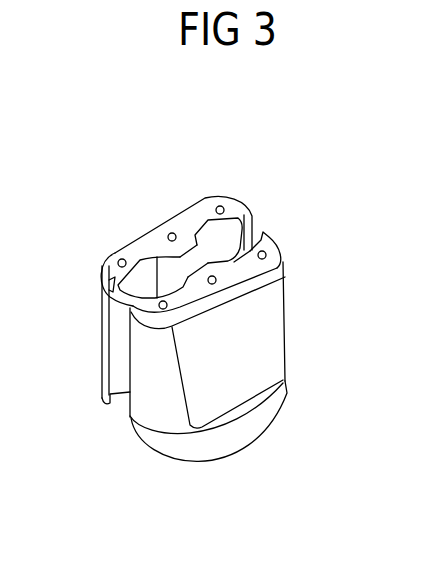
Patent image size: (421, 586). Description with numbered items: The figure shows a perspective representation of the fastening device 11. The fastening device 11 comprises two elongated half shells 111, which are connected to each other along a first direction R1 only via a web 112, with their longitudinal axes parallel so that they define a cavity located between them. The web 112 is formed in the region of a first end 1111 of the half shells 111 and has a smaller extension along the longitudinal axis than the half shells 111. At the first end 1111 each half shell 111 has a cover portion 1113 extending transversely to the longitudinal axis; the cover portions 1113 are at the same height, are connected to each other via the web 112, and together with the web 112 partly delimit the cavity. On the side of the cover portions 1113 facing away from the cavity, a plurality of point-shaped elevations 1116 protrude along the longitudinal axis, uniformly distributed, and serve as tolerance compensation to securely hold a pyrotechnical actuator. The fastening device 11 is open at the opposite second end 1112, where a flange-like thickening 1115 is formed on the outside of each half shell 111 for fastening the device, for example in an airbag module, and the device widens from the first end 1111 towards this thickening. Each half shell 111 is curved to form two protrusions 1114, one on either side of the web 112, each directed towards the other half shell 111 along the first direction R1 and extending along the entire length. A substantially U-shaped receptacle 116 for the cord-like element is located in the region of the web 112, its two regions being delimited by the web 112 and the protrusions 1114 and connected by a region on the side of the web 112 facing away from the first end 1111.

The fastening device 11 is at (125, 112).
The first direction R1 is at (331, 158).
The half shell 111 is at (102, 328).
The web 112 is at (180, 262).
The receptacle 116 is at (212, 235).
The first end 1111 is at (212, 300).
The second end 1112 is at (237, 457).
The cover portion 1113 is at (190, 217).
The protrusion 1114 is at (267, 237).
The flange-like thickening 1115 is at (187, 448).
The elevation 1116 is at (170, 234).